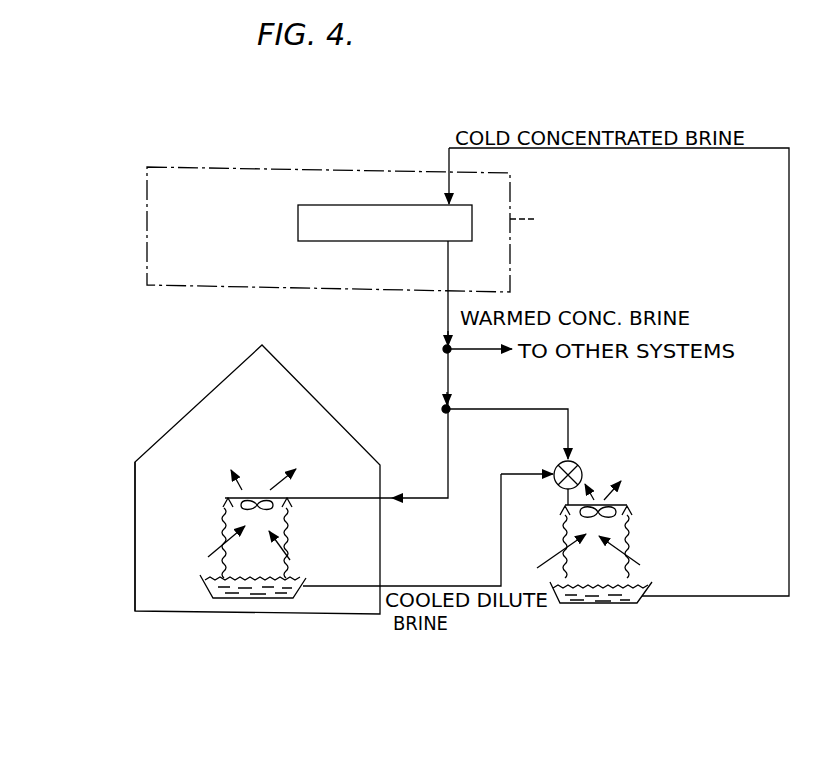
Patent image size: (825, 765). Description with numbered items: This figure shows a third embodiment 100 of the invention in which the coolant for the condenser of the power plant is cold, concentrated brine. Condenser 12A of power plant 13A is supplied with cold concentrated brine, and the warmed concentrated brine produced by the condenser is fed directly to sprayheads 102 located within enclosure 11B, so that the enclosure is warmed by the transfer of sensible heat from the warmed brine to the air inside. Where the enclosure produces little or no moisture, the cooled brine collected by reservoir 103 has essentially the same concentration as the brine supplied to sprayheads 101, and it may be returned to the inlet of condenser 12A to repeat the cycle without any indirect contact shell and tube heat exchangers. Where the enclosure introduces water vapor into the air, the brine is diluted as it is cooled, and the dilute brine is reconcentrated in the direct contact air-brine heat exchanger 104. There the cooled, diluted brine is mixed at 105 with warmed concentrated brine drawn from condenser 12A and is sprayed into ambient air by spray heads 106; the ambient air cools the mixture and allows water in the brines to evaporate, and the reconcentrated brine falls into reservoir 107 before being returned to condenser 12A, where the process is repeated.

The condenser 12A is at (459, 208).
The power plant 13A is at (510, 272).
The third embodiment 100 is at (176, 390).
The enclosure 11B is at (140, 502).
The sprayheads 101 is at (288, 497).
The sprayheads 102 is at (184, 547).
The reservoir 103 is at (304, 585).
The direct contact air-brine heat exchanger 104 is at (651, 528).
The mixing point 105 is at (580, 466).
The spray heads 106 is at (628, 505).
The reservoir 107 is at (616, 605).